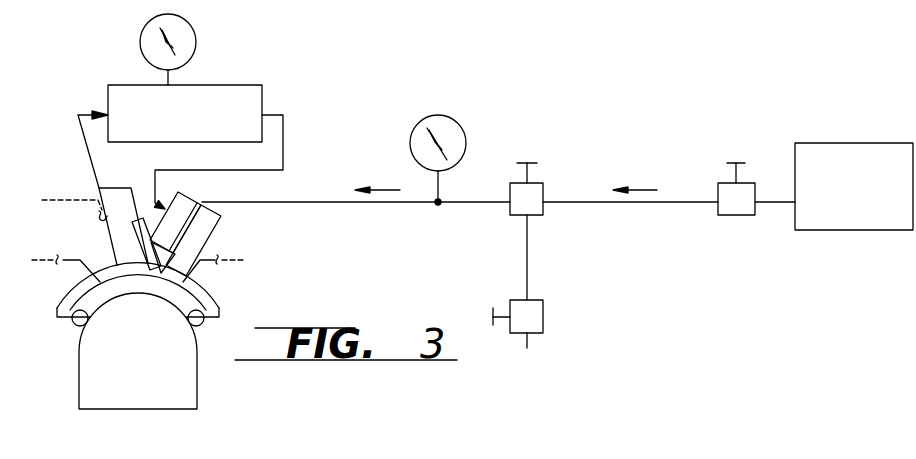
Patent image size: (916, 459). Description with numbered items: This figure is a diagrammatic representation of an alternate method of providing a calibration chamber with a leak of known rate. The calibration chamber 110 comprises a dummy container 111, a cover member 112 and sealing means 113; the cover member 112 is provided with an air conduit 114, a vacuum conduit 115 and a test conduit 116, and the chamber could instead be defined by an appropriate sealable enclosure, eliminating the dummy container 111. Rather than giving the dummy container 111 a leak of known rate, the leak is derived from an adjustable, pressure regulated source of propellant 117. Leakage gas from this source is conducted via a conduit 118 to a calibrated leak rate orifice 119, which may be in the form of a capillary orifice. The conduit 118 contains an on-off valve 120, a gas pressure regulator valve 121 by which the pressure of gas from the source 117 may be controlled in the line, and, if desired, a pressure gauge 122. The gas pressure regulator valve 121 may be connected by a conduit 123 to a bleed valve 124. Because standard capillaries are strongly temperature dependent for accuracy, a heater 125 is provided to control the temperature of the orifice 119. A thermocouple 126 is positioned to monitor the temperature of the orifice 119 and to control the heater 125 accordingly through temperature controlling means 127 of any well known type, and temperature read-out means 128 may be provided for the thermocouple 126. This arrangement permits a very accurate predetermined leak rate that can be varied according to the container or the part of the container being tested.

The calibration chamber 110 is at (62, 302).
The dummy container 111 is at (135, 402).
The cover member 112 is at (207, 303).
The sealing means 113 is at (200, 317).
The air conduit 114 is at (80, 260).
The vacuum conduit 115 is at (107, 235).
The test conduit 116 is at (200, 260).
The pressure regulated source of propellant 117 is at (850, 230).
The conduit 118 is at (252, 201).
The calibrated leak rate orifice 119 is at (172, 282).
The on-off valve 120 is at (718, 190).
The gas pressure regulator valve 121 is at (532, 190).
The pressure gauge 122 is at (460, 121).
The conduit 123 is at (527, 257).
The bleed valve 124 is at (535, 332).
The heater 125 is at (212, 232).
The thermocouple 126 is at (147, 278).
The temperature controlling means 127 is at (240, 85).
The temperature read-out means 128 is at (192, 33).